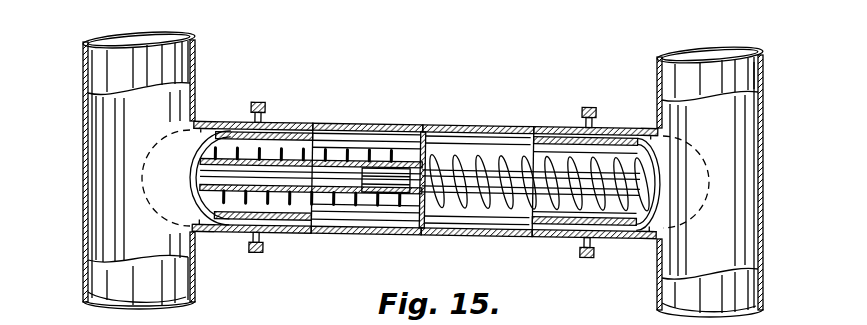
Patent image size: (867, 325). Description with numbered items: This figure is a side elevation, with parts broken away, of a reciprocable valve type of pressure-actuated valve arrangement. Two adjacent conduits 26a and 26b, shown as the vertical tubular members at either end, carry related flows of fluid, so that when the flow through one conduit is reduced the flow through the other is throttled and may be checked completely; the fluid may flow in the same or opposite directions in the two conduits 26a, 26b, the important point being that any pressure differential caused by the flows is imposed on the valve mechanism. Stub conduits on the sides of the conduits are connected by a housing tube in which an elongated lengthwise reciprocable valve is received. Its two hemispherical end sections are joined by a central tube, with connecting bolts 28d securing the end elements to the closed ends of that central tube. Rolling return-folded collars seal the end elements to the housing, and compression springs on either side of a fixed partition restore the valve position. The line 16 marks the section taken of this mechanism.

The section line 16 is at (72, 175).
The conduit 26a is at (183, 62).
The conduit 26b is at (660, 72).
The connecting bolt 28d is at (190, 180).